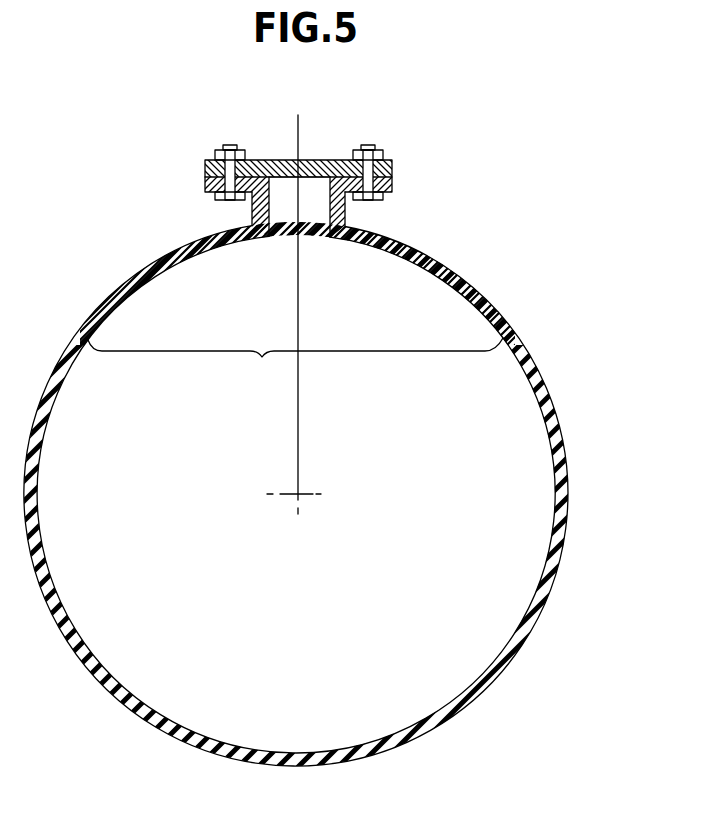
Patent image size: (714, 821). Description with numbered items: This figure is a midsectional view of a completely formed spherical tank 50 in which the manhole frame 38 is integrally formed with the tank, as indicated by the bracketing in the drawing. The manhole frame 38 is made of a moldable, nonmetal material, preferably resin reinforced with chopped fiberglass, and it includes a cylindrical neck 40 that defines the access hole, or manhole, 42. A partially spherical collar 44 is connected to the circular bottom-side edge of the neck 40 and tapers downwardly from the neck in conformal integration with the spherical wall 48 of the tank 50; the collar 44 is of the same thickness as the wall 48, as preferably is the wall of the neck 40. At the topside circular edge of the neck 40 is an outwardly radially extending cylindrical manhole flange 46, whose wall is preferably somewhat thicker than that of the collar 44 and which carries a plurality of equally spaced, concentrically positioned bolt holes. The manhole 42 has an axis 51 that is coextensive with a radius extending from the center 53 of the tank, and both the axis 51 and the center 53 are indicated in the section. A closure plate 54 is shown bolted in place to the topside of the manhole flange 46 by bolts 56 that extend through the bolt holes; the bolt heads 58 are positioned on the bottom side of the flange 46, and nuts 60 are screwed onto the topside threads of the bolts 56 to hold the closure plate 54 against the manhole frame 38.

The manhole frame 38 is at (295, 363).
The cylindrical neck 40 is at (345, 211).
The access hole 42 is at (326, 226).
The partially spherical collar 44 is at (135, 275).
The manhole flange 46 is at (392, 179).
The spherical wall 48 is at (537, 267).
The spherical tank 50 is at (538, 380).
The axis 51 is at (298, 392).
The center 53 is at (298, 494).
The closure plate 54 is at (283, 158).
The bolts 56 is at (231, 145).
The bolt heads 58 is at (224, 200).
The nuts 60 is at (223, 151).